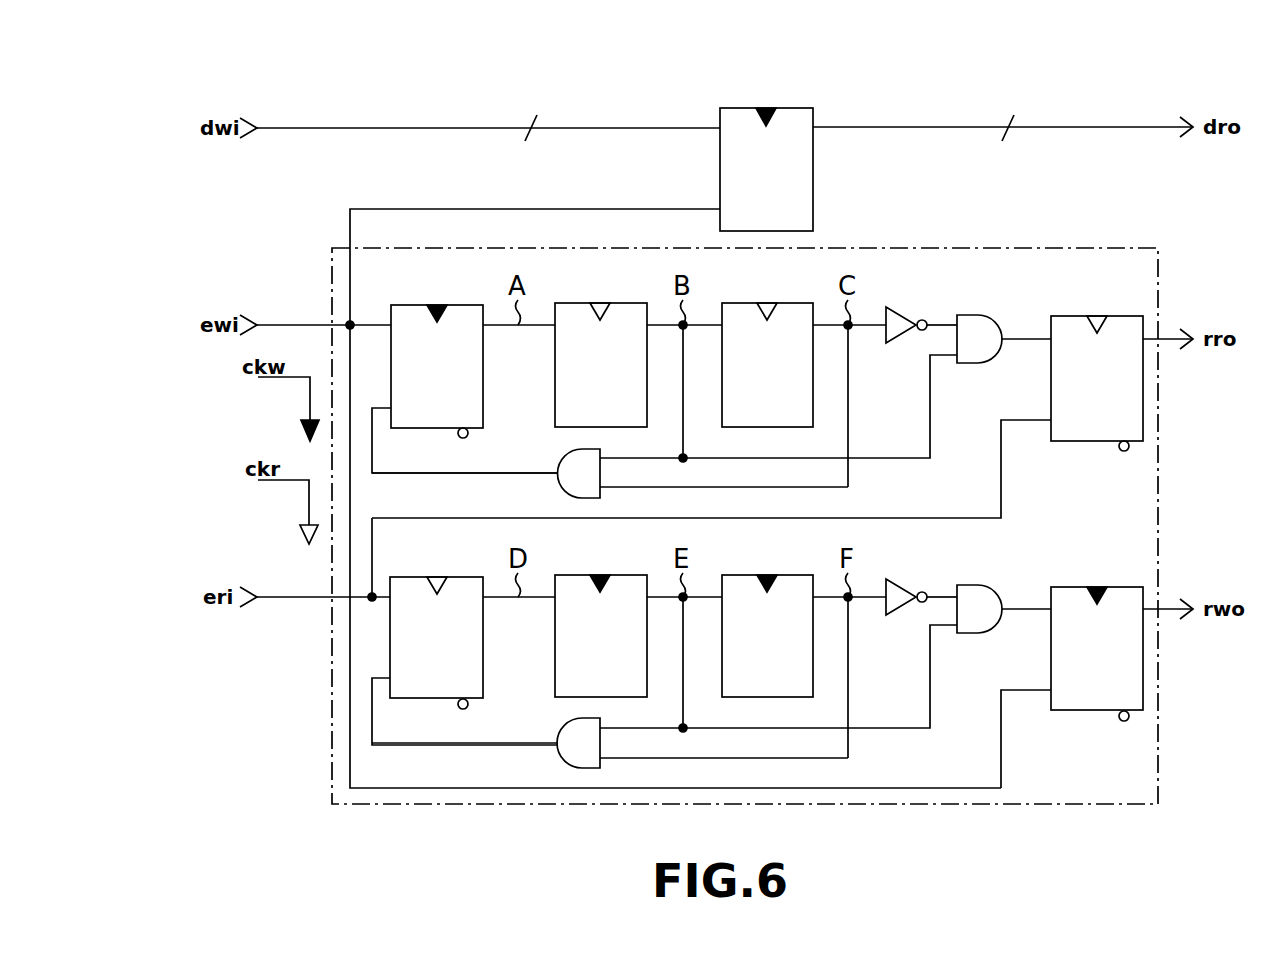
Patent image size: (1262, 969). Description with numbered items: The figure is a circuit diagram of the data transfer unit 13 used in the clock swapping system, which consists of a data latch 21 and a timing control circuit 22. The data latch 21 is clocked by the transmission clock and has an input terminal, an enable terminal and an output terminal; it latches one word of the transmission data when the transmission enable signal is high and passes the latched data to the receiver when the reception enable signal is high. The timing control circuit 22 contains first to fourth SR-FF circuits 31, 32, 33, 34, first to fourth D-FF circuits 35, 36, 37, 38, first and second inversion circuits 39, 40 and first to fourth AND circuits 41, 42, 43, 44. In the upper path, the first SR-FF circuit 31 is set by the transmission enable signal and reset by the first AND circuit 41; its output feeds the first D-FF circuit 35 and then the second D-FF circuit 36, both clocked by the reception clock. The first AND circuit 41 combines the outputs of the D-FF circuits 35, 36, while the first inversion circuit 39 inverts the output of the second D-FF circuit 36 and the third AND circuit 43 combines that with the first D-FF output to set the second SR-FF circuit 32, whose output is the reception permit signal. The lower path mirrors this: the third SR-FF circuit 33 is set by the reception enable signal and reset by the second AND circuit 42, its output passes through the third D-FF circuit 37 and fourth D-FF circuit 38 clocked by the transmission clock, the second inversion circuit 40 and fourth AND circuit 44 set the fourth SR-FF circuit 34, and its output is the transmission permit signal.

The data transfer unit 13 is at (882, 92).
The data latch 21 is at (792, 108).
The timing control circuit 22 is at (1030, 248).
The first SR-FF circuit 31 is at (465, 305).
The second SR-FF circuit 32 is at (1123, 316).
The third SR-FF circuit 33 is at (465, 577).
The fourth SR-FF circuit 34 is at (1123, 587).
The first D-FF circuit 35 is at (625, 303).
The second D-FF circuit 36 is at (793, 303).
The third D-FF circuit 37 is at (625, 575).
The fourth D-FF circuit 38 is at (793, 575).
The first inversion circuit 39 is at (900, 307).
The second inversion circuit 40 is at (900, 579).
The first AND circuit 41 is at (559, 459).
The second AND circuit 42 is at (559, 728).
The third AND circuit 43 is at (975, 315).
The fourth AND circuit 44 is at (975, 585).